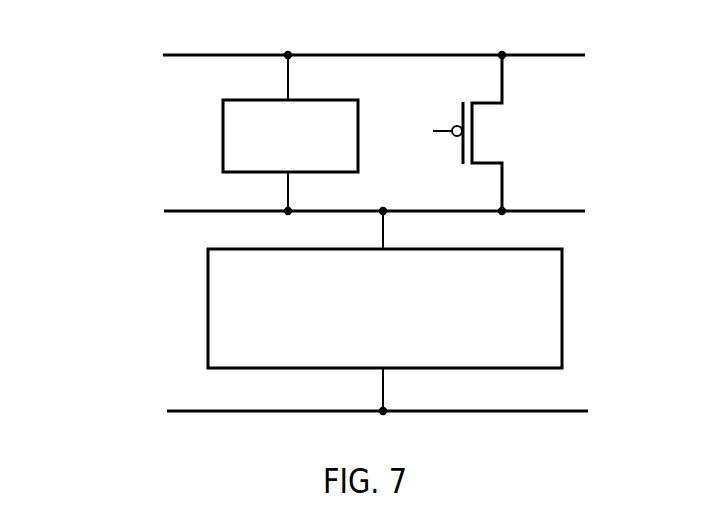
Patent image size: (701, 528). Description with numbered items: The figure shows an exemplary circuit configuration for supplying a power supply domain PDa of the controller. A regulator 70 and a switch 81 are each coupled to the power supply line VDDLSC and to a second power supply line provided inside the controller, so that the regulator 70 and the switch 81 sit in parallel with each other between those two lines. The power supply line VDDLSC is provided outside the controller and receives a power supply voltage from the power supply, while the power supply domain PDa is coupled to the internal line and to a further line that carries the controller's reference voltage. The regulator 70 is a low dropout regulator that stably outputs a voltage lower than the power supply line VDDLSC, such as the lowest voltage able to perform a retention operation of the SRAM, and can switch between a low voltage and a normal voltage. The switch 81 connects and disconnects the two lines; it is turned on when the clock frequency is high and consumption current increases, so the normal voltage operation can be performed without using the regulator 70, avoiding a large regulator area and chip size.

The regulator 70 is at (300, 100).
The switch 81 is at (502, 137).
The power supply domain PDa is at (385, 311).
The power supply line VDDLSC is at (326, 57).